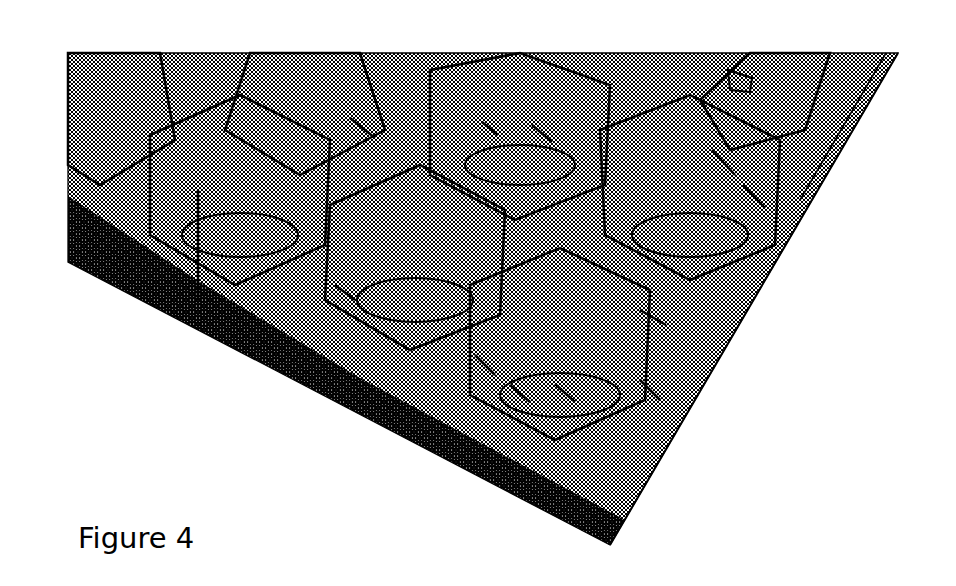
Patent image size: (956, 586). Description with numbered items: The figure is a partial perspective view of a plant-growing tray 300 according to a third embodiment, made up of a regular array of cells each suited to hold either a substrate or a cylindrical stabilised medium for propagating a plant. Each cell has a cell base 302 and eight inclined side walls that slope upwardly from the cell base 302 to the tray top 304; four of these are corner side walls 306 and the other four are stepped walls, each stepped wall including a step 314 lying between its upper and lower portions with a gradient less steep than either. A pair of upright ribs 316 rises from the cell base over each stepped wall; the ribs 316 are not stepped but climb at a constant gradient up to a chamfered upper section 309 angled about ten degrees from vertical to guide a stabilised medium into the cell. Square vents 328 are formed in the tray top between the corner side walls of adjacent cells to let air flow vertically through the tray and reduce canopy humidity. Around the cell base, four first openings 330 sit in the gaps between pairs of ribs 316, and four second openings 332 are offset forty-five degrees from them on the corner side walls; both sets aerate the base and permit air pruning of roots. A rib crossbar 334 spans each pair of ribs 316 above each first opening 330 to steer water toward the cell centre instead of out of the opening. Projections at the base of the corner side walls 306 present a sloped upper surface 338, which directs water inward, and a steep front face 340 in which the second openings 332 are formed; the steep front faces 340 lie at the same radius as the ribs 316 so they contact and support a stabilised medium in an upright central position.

The plant-growing tray 300 is at (102, 433).
The cell base 302 is at (740, 73).
The tray top 304 is at (798, 137).
The corner side walls 306 is at (753, 197).
The chamfered upper section 309 is at (485, 365).
The step 314 is at (653, 317).
The upright ribs 316 is at (345, 293).
The square vents 328 is at (362, 128).
The first openings 330 is at (542, 133).
The second openings 332 is at (490, 120).
The rib crossbar 334 is at (650, 390).
The sloped upper surface 338 is at (520, 393).
The steep front face 340 is at (565, 392).